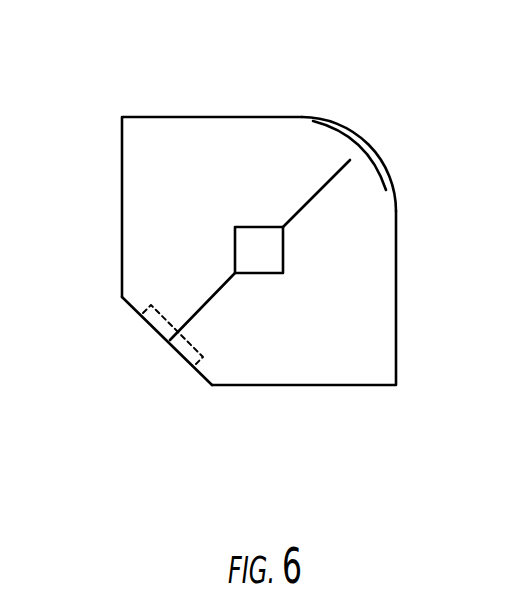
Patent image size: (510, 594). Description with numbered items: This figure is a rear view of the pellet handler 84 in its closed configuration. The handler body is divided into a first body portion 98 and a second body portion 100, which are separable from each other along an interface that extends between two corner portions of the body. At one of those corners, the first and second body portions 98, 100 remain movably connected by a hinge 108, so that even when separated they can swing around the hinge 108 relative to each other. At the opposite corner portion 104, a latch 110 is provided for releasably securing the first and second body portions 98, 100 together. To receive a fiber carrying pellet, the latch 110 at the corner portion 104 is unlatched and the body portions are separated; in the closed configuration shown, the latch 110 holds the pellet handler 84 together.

The sample holder insert 84 is at (87, 138).
The side wall 98 is at (340, 370).
The top surface 100 is at (202, 128).
The chamfered edge 104 is at (184, 357).
The rounded corner 108 is at (367, 140).
The slot 110 is at (187, 348).